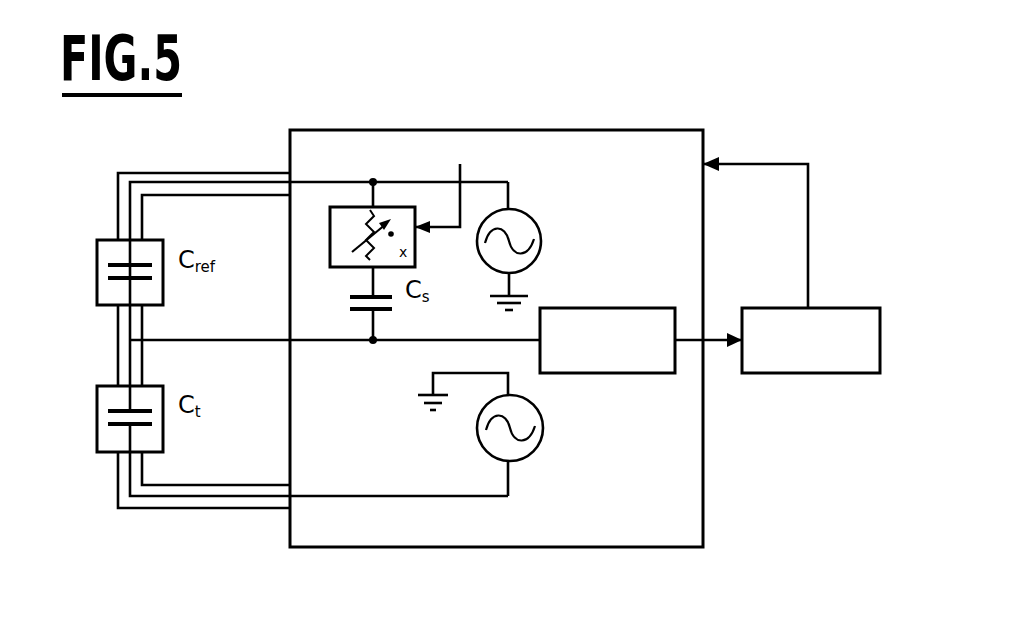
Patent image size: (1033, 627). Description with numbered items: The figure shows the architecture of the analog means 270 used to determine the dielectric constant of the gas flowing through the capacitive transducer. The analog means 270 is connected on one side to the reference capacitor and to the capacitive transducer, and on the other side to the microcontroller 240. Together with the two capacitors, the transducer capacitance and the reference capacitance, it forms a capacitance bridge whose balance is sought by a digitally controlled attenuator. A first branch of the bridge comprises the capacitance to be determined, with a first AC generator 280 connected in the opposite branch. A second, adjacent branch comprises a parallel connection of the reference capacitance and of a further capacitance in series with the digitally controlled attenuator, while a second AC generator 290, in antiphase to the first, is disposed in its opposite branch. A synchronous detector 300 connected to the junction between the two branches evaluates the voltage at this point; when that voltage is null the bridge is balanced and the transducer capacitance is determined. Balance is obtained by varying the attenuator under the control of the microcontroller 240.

The microcontroller 240 is at (835, 320).
The analog means 270 is at (705, 475).
The first AC generator 280 is at (517, 452).
The second AC generator 290 is at (520, 225).
The synchronous detector 300 is at (622, 308).